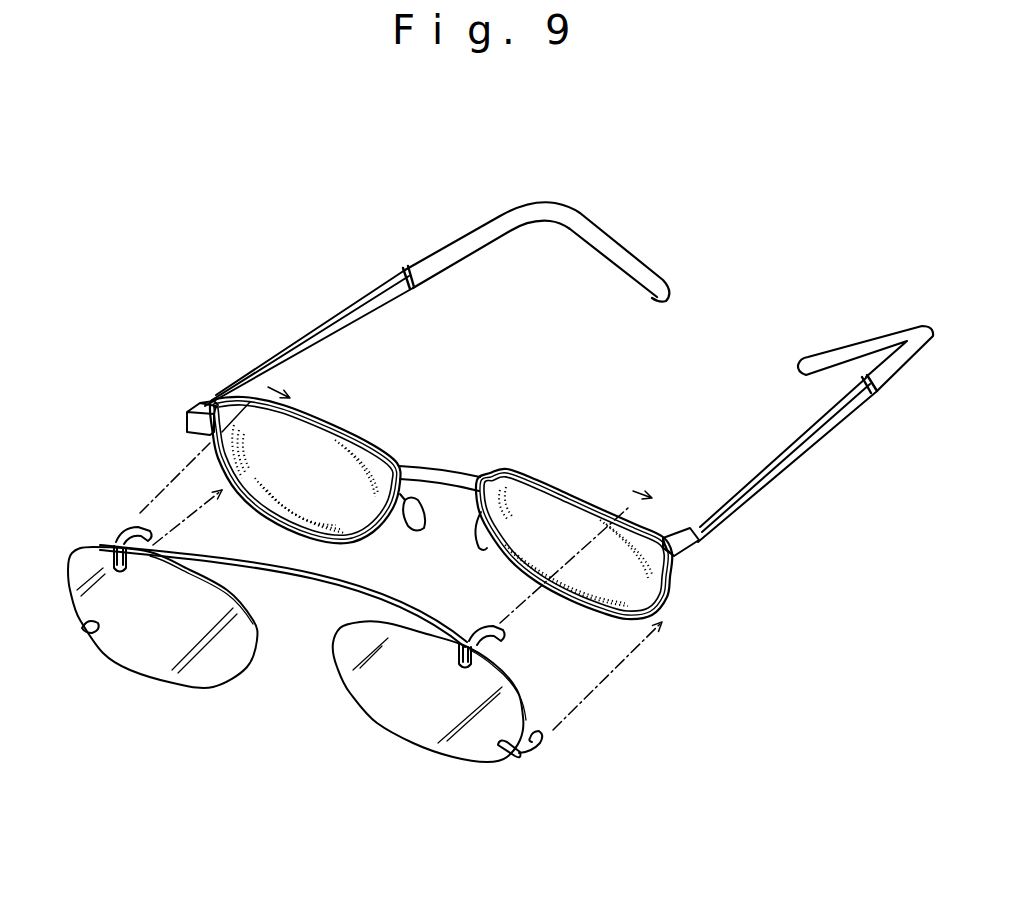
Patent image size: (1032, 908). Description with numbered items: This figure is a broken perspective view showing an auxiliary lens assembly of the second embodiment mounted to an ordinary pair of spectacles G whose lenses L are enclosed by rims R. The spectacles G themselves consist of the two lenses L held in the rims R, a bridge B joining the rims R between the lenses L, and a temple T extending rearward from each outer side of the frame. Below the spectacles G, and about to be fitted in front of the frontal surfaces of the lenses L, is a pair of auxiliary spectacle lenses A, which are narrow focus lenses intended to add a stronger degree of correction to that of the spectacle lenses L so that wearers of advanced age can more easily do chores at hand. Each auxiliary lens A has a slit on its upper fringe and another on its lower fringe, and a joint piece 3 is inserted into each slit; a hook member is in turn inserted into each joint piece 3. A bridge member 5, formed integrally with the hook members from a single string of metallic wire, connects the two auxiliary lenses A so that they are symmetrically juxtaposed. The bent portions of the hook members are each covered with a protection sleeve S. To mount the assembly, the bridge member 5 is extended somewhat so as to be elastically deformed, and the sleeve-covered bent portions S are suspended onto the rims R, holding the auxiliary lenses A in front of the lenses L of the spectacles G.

The spectacles G is at (556, 450).
The lenses L is at (373, 468).
The rims R is at (343, 419).
The bridge B is at (436, 474).
The temple T is at (321, 330).
The auxiliary spectacle lenses A is at (160, 647).
The joint piece 3 is at (112, 557).
The bridge member 5 is at (307, 581).
The protection sleeve S is at (121, 539).